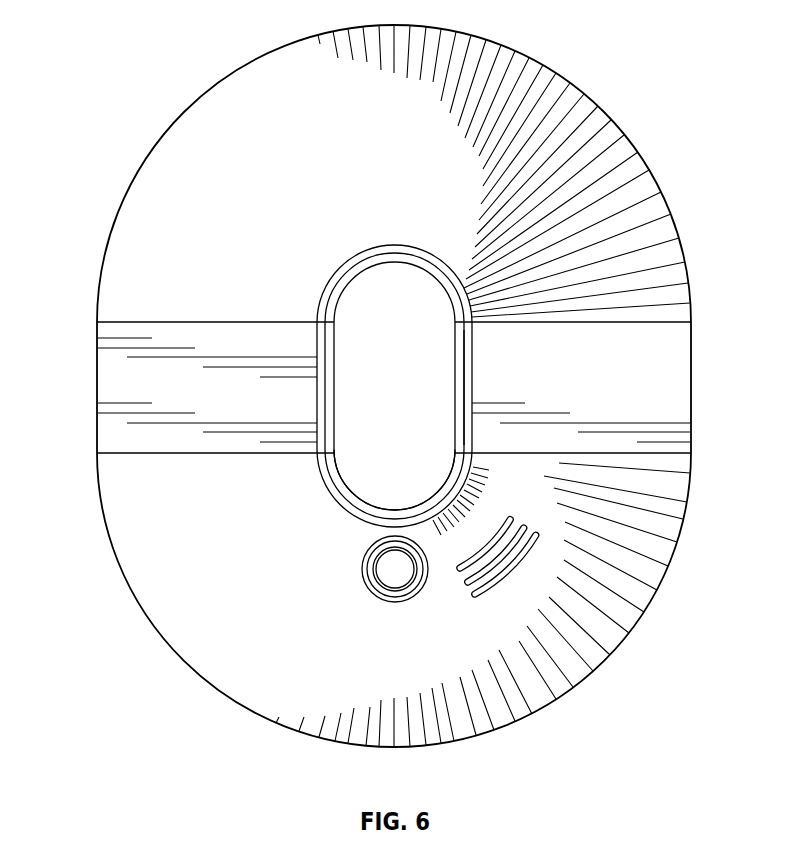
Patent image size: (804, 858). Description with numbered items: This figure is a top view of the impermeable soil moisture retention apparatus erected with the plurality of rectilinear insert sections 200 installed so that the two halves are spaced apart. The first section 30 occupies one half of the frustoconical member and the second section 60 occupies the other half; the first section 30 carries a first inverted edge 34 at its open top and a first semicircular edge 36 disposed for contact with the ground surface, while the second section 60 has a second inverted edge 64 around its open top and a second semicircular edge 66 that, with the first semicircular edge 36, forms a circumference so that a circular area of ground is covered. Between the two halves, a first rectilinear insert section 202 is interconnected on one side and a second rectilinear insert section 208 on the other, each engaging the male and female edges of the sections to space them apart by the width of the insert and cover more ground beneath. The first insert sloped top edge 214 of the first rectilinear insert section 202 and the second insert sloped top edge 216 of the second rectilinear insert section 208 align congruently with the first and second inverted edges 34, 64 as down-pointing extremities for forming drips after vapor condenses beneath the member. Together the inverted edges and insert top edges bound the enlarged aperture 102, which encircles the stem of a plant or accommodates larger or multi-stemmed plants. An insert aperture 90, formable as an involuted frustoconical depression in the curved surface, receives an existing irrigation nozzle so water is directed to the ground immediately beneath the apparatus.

The rectilinear insert sections 200 is at (401, 386).
The first section 30 is at (275, 566).
The first inverted edge 34 is at (395, 512).
The first semicircular edge 36 is at (152, 622).
The second section 60 is at (311, 194).
The second inverted edge 64 is at (397, 258).
The second semicircular edge 66 is at (521, 52).
The insert aperture 90 is at (390, 575).
The aperture 102 is at (413, 394).
The first rectilinear insert section 202 is at (211, 394).
The second rectilinear insert section 208 is at (604, 392).
The first insert sloped top edge 214 is at (327, 364).
The second insert sloped top edge 216 is at (462, 434).